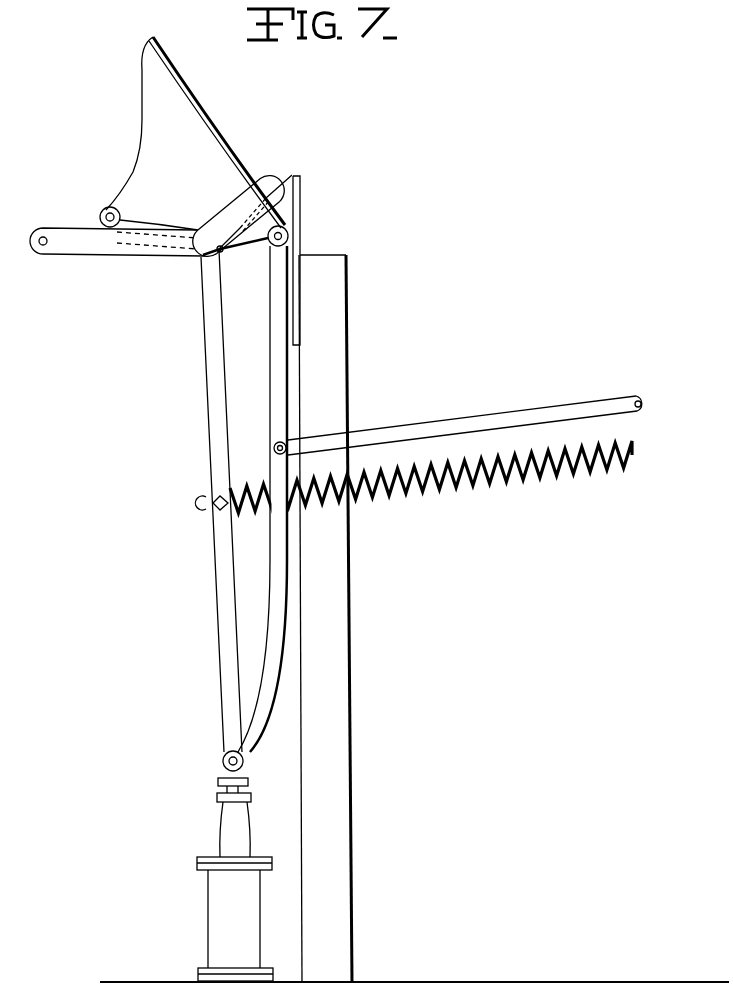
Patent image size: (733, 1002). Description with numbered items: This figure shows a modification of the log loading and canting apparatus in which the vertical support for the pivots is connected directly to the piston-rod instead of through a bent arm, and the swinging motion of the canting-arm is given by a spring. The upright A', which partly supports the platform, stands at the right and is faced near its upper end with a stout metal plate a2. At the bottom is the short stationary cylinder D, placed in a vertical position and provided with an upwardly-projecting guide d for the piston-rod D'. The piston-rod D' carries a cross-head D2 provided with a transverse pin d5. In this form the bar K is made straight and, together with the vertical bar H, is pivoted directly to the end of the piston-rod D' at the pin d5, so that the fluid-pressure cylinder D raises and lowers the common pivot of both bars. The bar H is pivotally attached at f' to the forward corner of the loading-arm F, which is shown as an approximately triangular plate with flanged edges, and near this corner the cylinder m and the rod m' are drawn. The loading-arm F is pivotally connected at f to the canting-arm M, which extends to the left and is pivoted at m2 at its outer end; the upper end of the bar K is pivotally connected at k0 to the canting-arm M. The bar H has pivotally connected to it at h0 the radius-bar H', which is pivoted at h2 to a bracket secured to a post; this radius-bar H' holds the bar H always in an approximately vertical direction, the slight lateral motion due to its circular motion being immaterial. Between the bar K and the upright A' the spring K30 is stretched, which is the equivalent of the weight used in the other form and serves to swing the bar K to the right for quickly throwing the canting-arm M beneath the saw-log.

The loading-arm F is at (195, 146).
The pivot of side bars to loading-arm f is at (120, 209).
The cylinder on foot lever m is at (239, 202).
The rod m' is at (272, 197).
The metal plates a2 is at (299, 216).
The pivot of bars H to loading-arm f' is at (303, 236).
The pivot of link M m2 is at (43, 248).
The canting-arms M is at (128, 248).
The pivot of long arms to canting-arms k0 is at (199, 252).
The bar K is at (212, 402).
The pivot of radius-bar to bars H h0 is at (288, 440).
The radius-bar H' is at (465, 417).
The pivot of radius-bar to bracket h2 is at (641, 397).
The spring K30 is at (475, 483).
The vertical bars H is at (285, 499).
The uprights A' is at (325, 618).
The cross-head D2 is at (223, 772).
The transverse pin d5 is at (245, 758).
The piston-rod D' is at (210, 794).
The guide d is at (238, 815).
The short cylinder D is at (235, 919).